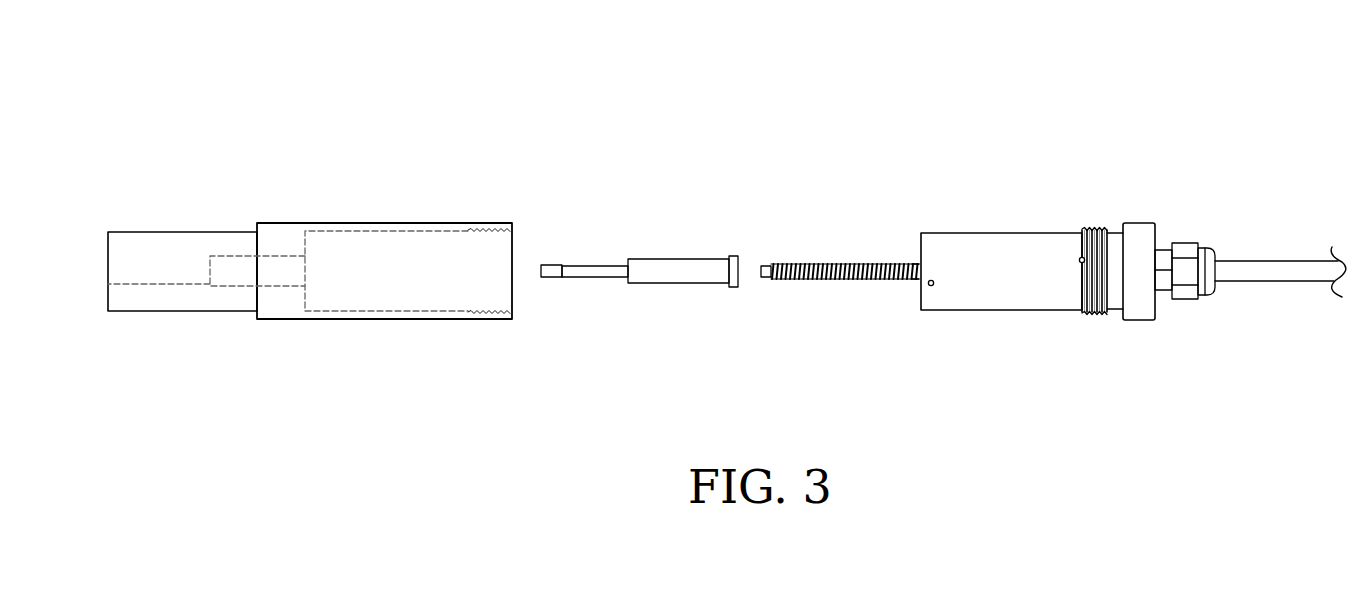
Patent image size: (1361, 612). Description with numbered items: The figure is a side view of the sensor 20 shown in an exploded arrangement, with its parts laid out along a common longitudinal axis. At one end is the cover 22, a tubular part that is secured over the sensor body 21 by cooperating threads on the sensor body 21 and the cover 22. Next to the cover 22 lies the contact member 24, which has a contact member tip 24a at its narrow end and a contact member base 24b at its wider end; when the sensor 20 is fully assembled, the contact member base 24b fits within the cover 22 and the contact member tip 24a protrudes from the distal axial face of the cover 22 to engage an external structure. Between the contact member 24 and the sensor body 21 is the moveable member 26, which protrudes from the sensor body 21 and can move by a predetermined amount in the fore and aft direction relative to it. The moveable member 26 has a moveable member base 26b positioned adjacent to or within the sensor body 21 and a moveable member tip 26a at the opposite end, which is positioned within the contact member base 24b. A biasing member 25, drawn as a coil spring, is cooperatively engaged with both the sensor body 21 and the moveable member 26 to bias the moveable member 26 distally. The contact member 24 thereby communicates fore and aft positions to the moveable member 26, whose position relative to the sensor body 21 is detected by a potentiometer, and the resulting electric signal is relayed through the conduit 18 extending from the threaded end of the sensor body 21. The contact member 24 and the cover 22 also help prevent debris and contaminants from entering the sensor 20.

The conduit 18 is at (1260, 281).
The sensor 20 is at (389, 91).
The sensor body 21 is at (1004, 232).
The cover 22 is at (282, 222).
The contact member 24 is at (639, 285).
The contact member tip 24a is at (553, 277).
The contact member base 24b is at (711, 258).
The biasing member 25 is at (850, 280).
The moveable member 26 is at (839, 269).
The moveable member tip 26a is at (766, 277).
The moveable member base 26b is at (920, 265).